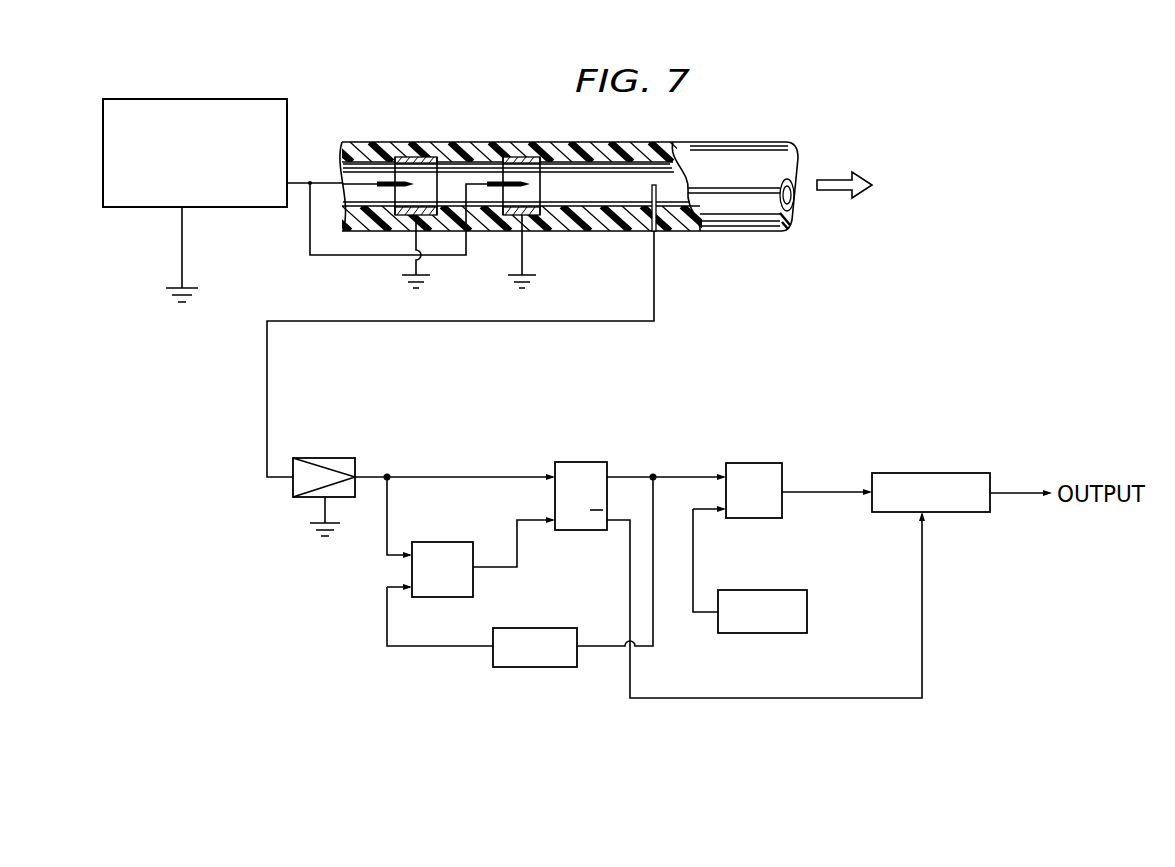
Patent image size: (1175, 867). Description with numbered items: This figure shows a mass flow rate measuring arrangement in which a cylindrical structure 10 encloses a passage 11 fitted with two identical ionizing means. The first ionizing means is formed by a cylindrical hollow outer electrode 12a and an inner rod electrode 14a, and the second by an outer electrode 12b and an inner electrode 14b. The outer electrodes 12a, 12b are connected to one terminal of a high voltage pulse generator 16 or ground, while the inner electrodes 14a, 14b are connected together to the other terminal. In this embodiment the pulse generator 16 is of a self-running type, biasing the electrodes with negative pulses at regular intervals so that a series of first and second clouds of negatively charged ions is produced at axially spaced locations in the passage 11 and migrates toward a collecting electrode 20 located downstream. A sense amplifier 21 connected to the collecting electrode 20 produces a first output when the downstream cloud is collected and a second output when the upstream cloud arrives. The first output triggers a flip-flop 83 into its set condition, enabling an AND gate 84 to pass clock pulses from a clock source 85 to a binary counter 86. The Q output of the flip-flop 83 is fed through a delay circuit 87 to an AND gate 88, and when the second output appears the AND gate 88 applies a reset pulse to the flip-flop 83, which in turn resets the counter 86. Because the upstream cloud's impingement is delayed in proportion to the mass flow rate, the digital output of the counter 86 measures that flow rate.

The high voltage pulse generator 16 is at (211, 100).
The cylindrical structure 10 is at (597, 150).
The passage 11 is at (632, 177).
The outer electrode 12a is at (408, 157).
The outer electrode 12b is at (522, 157).
The inner electrode 14a is at (392, 190).
The inner electrode 14b is at (513, 218).
The collecting electrode 20 is at (658, 195).
The sense amplifier 21 is at (333, 460).
The flip-flop 83 is at (580, 465).
The AND gate 84 is at (747, 467).
The clock source 85 is at (775, 593).
The binary counter 86 is at (913, 477).
The delay circuit 87 is at (543, 632).
The AND gate 88 is at (447, 547).